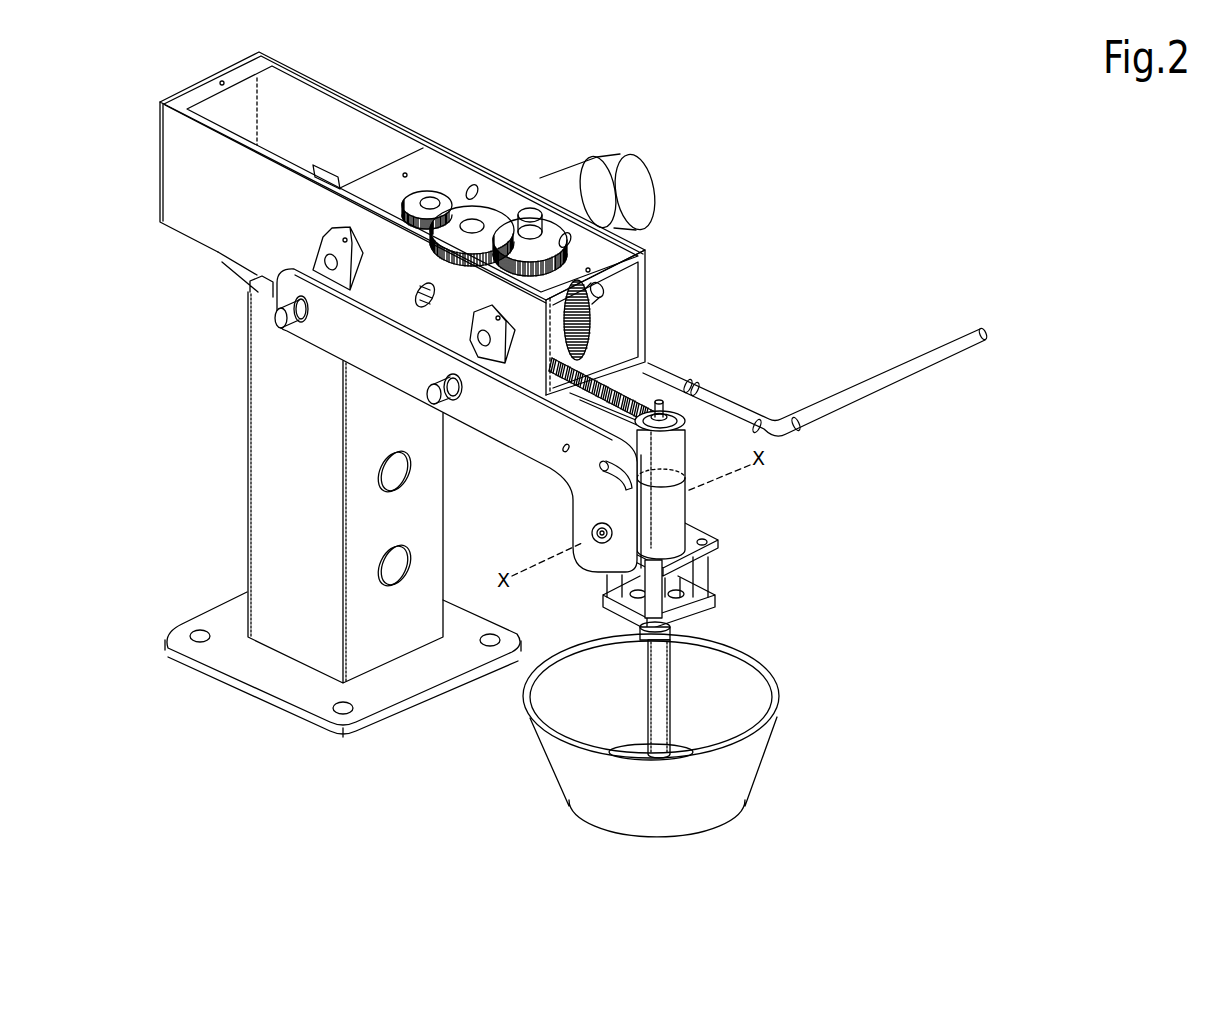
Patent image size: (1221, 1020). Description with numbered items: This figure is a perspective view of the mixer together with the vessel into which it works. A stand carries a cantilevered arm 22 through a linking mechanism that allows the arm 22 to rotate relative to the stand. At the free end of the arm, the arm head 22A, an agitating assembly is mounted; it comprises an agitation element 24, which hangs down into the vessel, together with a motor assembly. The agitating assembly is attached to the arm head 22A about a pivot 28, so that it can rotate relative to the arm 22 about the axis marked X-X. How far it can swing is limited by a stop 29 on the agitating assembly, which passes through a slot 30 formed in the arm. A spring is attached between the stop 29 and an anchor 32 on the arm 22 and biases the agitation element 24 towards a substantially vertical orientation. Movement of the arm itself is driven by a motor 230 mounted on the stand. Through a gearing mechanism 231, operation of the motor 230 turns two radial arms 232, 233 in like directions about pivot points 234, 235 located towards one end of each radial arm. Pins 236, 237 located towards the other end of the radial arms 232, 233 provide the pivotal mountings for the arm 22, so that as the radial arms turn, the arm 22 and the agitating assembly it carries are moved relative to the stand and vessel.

The cantilevered arm 22 is at (485, 436).
The free end (arm head) 22A is at (687, 557).
The agitation element 24 is at (673, 655).
The pivot 28 is at (592, 536).
The stop 29 is at (601, 470).
The slot 30 is at (645, 480).
The anchor 32 is at (562, 447).
The motor 230 is at (630, 163).
The gearing mechanism 231 is at (527, 260).
The radial arm 232 is at (351, 242).
The radial arm 233 is at (515, 343).
The pivot point 234 is at (333, 256).
The pivot point 235 is at (495, 335).
The pin 236 is at (276, 320).
The pin 237 is at (417, 400).